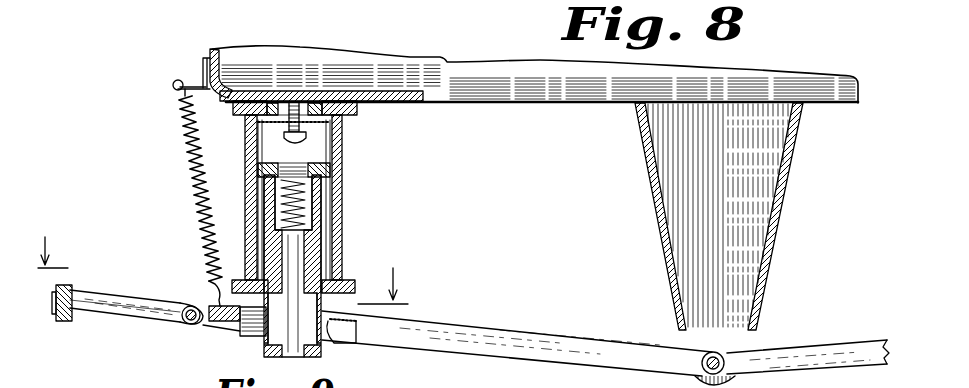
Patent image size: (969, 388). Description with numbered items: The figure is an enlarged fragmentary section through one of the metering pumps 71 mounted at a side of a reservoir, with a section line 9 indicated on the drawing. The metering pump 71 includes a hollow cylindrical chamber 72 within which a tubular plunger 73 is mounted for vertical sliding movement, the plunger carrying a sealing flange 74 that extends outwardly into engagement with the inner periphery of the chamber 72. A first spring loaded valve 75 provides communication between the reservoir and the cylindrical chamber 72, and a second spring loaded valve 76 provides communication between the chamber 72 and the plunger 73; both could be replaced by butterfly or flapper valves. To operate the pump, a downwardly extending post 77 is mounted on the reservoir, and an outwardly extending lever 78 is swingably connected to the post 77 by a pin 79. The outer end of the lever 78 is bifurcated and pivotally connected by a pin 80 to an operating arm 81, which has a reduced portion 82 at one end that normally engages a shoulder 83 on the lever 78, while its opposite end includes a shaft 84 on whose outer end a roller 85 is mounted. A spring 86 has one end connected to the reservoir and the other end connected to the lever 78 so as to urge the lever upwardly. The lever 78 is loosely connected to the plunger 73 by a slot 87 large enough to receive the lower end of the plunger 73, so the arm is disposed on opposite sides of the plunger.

The section line 9- 9 is at (224, 270).
The metering pump 71 is at (347, 187).
The hollow cylindrical chamber 72 is at (345, 150).
The tubular plunger 73 is at (318, 247).
The sealing flange 74 is at (262, 150).
The first spring loaded valve 75 is at (296, 130).
The second spring loaded valve 76 is at (280, 177).
The downwardly extending post 77 is at (674, 223).
The lever 78 is at (530, 336).
The pin 79 is at (715, 353).
The pin 80 is at (187, 325).
The operating arm 81 is at (168, 299).
The reduced portion 82 is at (217, 322).
The shoulder 83 is at (238, 337).
The shaft 84 is at (97, 314).
The roller 85 is at (72, 290).
The spring 86 is at (185, 140).
The slot 87 is at (342, 338).